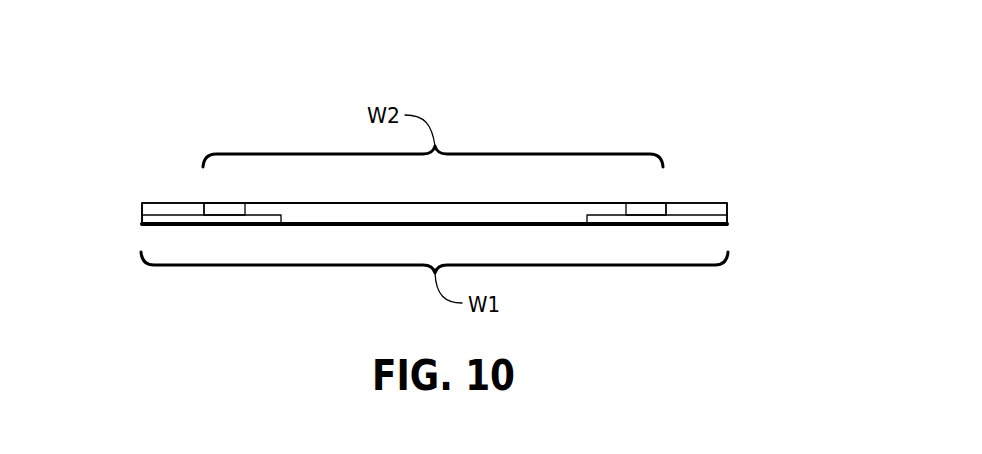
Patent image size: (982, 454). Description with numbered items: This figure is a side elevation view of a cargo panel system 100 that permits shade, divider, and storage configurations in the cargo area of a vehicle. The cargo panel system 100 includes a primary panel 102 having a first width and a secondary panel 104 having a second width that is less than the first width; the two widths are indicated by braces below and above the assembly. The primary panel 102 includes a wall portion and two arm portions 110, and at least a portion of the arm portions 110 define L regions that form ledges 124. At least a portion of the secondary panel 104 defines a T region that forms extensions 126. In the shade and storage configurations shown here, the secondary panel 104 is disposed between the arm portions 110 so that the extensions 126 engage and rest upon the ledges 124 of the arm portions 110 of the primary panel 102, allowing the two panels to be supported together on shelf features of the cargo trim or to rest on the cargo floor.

The cargo panel system 100 is at (278, 86).
The primary panel 102 is at (695, 210).
The secondary panel 104 is at (456, 215).
The arm portions 110 is at (153, 213).
The ledges 124 is at (245, 215).
The extensions 126 is at (222, 215).